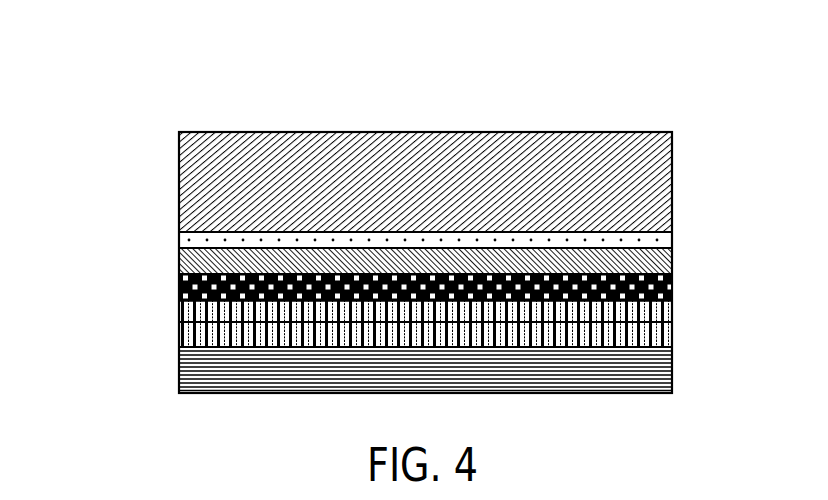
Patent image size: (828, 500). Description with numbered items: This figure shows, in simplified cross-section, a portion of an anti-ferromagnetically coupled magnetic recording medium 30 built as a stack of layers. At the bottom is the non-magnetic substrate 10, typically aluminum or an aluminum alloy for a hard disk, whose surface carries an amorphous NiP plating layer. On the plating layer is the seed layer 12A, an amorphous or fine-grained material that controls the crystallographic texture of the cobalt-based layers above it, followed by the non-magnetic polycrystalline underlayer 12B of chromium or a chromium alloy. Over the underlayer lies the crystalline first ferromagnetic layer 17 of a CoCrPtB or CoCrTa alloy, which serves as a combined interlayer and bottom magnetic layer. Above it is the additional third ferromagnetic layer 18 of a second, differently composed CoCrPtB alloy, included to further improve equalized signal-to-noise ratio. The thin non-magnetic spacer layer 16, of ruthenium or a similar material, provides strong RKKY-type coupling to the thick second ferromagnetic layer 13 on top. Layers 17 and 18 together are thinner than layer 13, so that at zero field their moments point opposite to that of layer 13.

The magnetic recording medium 30 is at (407, 112).
The second ferromagnetic layer 13 is at (680, 183).
The spacer layer 16 is at (168, 237).
The third ferromagnetic layer 18 is at (168, 261).
The first ferromagnetic layer 17 is at (680, 283).
The underlayer 12B is at (680, 310).
The seed layer 12A is at (680, 338).
The non-magnetic substrate 10 is at (680, 372).